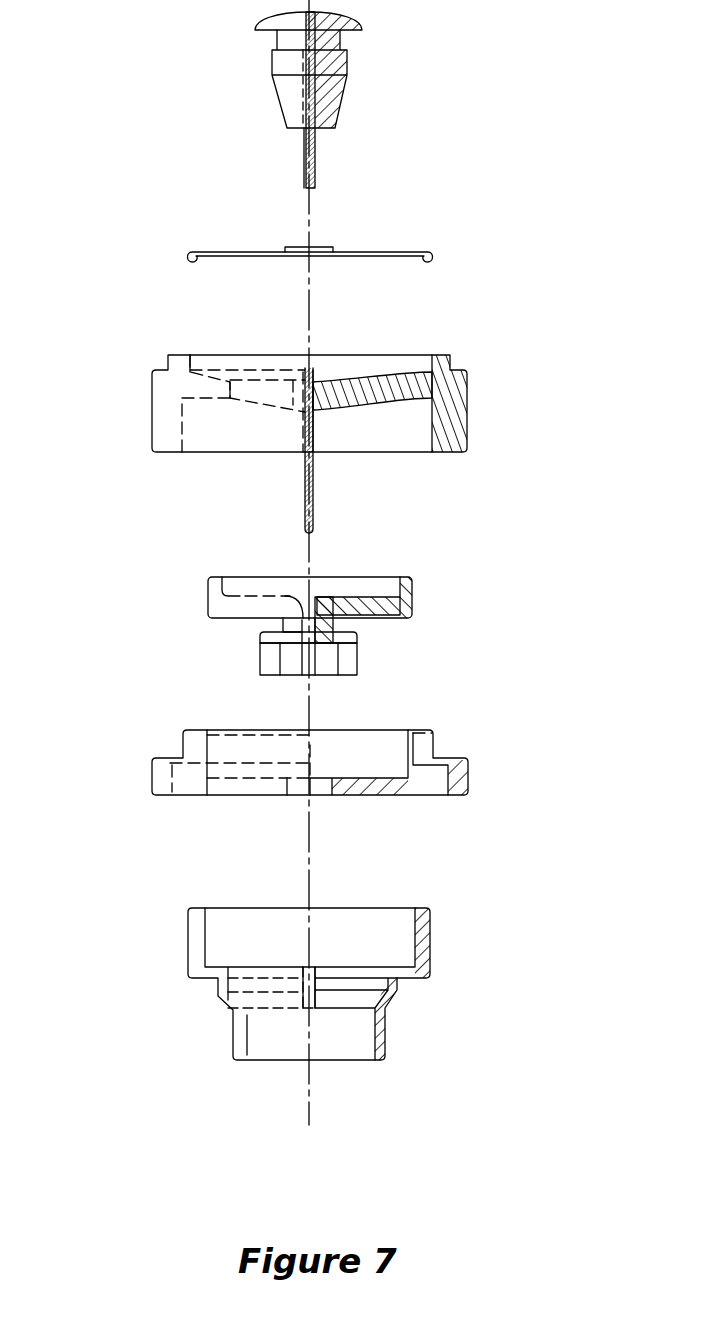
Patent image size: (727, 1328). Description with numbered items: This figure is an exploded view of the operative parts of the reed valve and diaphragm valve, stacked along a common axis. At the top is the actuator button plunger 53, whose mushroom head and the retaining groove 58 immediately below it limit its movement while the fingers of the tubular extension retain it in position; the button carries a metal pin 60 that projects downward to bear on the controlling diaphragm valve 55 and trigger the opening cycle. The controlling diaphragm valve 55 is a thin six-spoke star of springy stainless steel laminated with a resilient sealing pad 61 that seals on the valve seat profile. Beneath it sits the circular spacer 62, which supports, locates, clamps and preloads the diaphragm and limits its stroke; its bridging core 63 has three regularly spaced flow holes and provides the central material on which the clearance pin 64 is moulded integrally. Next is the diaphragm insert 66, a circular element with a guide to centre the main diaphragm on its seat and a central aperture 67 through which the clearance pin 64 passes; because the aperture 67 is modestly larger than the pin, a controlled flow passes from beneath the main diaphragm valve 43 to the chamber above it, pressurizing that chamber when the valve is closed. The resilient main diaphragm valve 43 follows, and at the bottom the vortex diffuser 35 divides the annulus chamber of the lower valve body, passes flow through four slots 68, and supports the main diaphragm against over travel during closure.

The vortex diffuser 35 is at (188, 951).
The main diaphragm valve 43 is at (153, 762).
The actuator button plunger 53 is at (272, 62).
The controlling diaphragm valve 55 is at (192, 256).
The groove 58 is at (340, 43).
The metal pin 60 is at (304, 168).
The resilient sealing pad 61 is at (318, 248).
The spacer 62 is at (152, 412).
The bridging core 63 is at (314, 383).
The clearance pin 64 is at (314, 511).
The diaphragm insert 66 is at (208, 603).
The aperture 67 is at (317, 598).
The slots 68 is at (311, 1003).